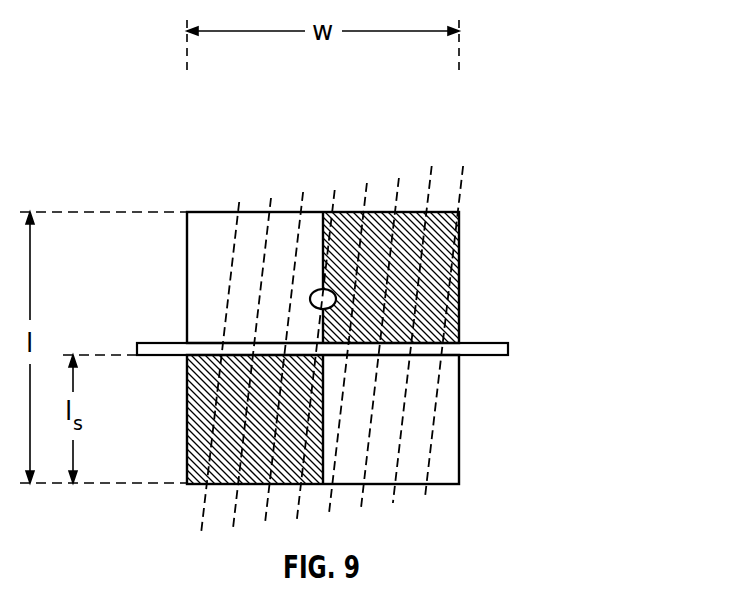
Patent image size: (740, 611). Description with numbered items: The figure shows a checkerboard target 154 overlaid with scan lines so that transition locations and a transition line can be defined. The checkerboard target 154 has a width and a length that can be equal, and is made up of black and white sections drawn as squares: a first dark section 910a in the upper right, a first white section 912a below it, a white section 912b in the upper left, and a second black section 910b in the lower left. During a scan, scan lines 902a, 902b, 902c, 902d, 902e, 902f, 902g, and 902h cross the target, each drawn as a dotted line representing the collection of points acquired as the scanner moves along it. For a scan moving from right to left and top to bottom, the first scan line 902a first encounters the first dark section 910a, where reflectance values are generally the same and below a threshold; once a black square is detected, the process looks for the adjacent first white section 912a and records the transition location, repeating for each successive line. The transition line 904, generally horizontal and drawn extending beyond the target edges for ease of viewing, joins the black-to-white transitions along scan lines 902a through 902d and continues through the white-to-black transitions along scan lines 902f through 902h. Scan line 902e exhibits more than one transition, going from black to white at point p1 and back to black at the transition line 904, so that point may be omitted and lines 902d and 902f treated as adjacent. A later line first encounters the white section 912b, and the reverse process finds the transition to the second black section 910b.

The checkerboard target 154 is at (594, 208).
The first scan line 902a is at (455, 200).
The scan line 902b is at (426, 173).
The scan line 902c is at (395, 178).
The scan line 902d is at (371, 183).
The scan line 902e is at (339, 190).
The scan line 902f is at (307, 192).
The scan line 902g is at (275, 198).
The scan line 902h is at (243, 202).
The transition line 904 is at (497, 355).
The first dark section 910a is at (459, 302).
The second black section 910b is at (205, 398).
The first white section 912a is at (459, 462).
The white section 912b is at (203, 271).
The transition point p1 is at (314, 291).